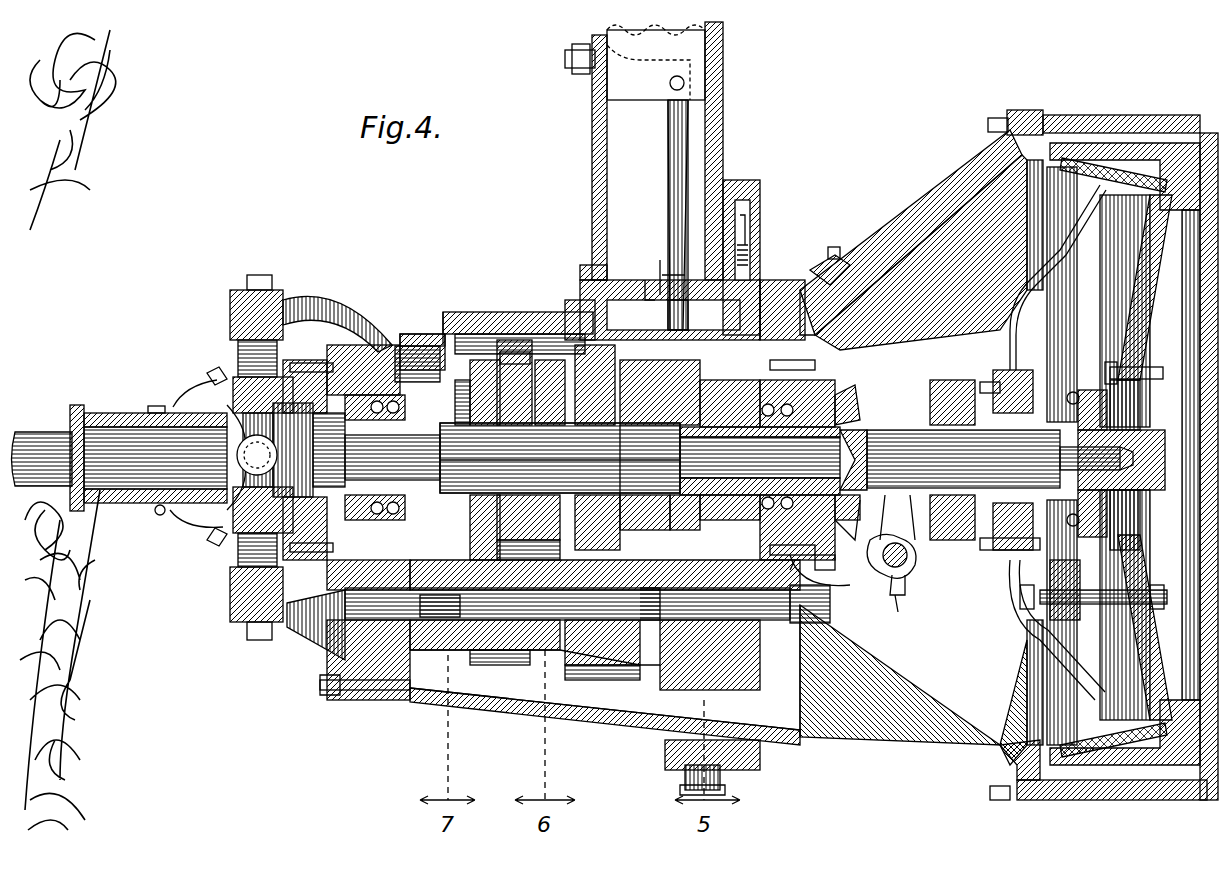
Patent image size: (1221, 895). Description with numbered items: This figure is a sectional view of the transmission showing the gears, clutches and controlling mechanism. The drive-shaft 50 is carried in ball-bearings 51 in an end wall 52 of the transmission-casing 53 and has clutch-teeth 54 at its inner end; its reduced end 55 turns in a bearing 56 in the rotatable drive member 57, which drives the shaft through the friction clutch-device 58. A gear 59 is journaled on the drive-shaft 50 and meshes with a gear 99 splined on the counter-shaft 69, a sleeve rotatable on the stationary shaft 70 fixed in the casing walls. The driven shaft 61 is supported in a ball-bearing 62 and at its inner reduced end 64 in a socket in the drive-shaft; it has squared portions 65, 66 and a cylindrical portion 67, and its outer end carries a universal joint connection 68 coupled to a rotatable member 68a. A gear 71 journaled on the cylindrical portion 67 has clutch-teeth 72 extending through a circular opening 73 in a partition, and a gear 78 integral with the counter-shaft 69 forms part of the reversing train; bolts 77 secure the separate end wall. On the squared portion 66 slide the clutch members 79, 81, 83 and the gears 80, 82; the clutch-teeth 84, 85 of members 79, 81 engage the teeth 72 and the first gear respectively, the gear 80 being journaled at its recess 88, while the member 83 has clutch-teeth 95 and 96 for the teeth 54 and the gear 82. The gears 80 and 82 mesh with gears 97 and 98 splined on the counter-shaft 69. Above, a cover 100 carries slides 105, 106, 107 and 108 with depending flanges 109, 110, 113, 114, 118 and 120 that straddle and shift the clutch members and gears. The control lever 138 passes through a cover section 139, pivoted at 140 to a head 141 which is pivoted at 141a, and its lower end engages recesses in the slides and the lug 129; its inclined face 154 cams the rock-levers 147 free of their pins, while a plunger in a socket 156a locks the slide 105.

The drive-shaft 50 is at (885, 430).
The ball-bearings 51 is at (790, 380).
The end wall 52 is at (870, 310).
The transmission-casing 53 is at (560, 710).
The clutch-teeth 54 is at (690, 530).
The reduced end 55 is at (1040, 365).
The bearing 56 is at (1085, 405).
The rotatable drive member 57 is at (1168, 160).
The friction clutch-device 58 is at (1105, 170).
The gear 59 is at (800, 560).
The driven shaft 61 is at (560, 458).
The ball-bearing 62 is at (370, 338).
The inner reduced end 64 is at (835, 522).
The squared end portion 65 is at (872, 360).
The squared portion 66 is at (560, 458).
The cylindrical portion 67 is at (392, 457).
The universal joint connection 68 is at (205, 392).
The rotatable member 68a is at (118, 412).
The counter-shaft 69 is at (470, 650).
The stationary shaft 70 is at (330, 610).
The gear 71 is at (415, 346).
The clutch-teeth 72 is at (432, 334).
The circular opening 73 is at (455, 312).
The bolts 77 is at (340, 690).
The gear 78 is at (428, 617).
The clutch member 79 is at (480, 380).
The gear 80 is at (516, 352).
The clutch member 81 is at (548, 360).
The gear 82 is at (600, 345).
The clutch member 83 is at (645, 530).
The clutch-teeth 84 is at (480, 520).
The clutch-teeth 85 is at (528, 559).
The recess 88 is at (548, 520).
The clutch-teeth 95 is at (665, 600).
The clutch-teeth 96 is at (612, 520).
The gear 97 is at (505, 665).
The gear 98 is at (590, 680).
The gear 99 is at (735, 735).
The cover 100 is at (445, 312).
The slide 105 is at (778, 280).
The slide 106 is at (665, 360).
The slide 107 is at (575, 300).
The slide 108 is at (525, 334).
The depending flange 109 is at (478, 360).
The depending flange 110 is at (560, 443).
The depending flange 113 is at (510, 340).
The depending flange 114 is at (645, 325).
The depending flange 118 is at (643, 460).
The depending flange 120 is at (822, 272).
The lug 129 is at (685, 300).
The control lever 138 is at (690, 130).
The cover section 139 is at (592, 140).
The pivot 140 is at (684, 83).
The head 141 is at (630, 95).
The pivot 141a is at (580, 70).
The rock-lever 147 is at (640, 300).
The inclined face 154 is at (650, 290).
The socket 156a is at (770, 260).